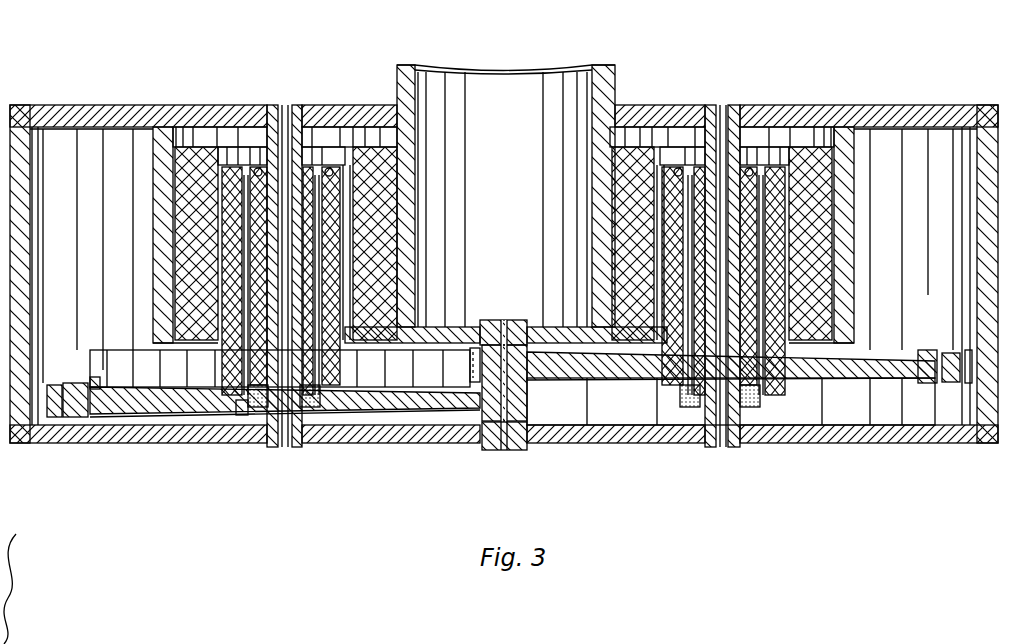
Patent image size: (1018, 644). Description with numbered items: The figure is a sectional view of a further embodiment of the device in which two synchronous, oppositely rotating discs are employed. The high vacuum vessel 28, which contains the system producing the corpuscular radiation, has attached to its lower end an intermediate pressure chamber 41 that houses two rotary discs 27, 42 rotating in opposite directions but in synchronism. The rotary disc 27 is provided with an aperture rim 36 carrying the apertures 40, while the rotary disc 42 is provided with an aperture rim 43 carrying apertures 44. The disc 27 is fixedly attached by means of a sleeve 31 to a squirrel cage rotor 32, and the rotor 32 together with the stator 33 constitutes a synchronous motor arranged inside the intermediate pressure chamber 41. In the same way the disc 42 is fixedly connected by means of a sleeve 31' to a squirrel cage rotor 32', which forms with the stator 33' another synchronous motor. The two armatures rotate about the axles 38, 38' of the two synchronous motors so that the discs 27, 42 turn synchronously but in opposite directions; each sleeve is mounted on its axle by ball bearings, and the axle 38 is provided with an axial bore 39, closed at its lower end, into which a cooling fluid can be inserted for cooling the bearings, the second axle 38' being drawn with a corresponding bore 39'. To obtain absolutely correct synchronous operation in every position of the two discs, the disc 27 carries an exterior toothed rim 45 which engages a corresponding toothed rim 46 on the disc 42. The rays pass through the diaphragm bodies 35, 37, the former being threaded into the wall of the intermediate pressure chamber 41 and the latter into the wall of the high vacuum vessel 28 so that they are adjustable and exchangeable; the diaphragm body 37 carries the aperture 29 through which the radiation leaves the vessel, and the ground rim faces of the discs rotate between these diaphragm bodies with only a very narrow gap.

The rotary disc 27 is at (865, 360).
The high vacuum vessel 28 is at (410, 118).
The aperture 29 is at (505, 325).
The sleeve 31 is at (679, 404).
The sleeve 31' is at (248, 432).
The squirrel cage rotor 32 is at (780, 235).
The squirrel cage rotor 32' is at (233, 235).
The stator 33 is at (844, 235).
The stator 33' is at (161, 235).
The diaphragm body 35 is at (496, 442).
The aperture rim 36 is at (927, 350).
The diaphragm body 37 is at (492, 322).
The axle 38 is at (746, 261).
The axle 38' is at (318, 261).
The axial bore 39 is at (713, 261).
The left diaphragm 39' is at (287, 261).
The apertures 40 is at (930, 383).
The intermediate pressure chamber 41 is at (942, 118).
The rotary disc 42 is at (180, 400).
The aperture rim 43 is at (55, 412).
The apertures 44 is at (67, 413).
The exterior toothed rim 45 is at (957, 385).
The toothed rim 46 is at (96, 360).